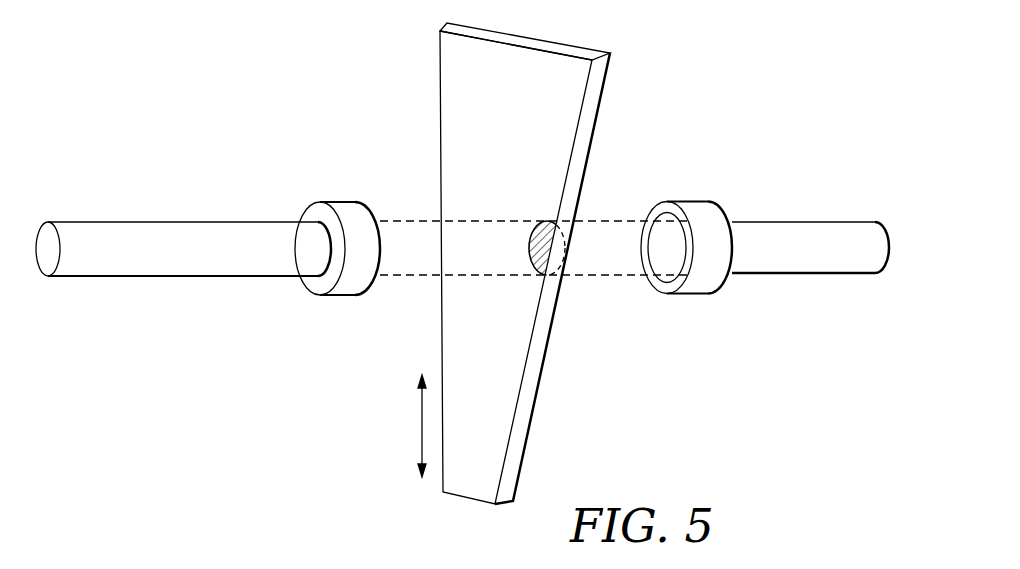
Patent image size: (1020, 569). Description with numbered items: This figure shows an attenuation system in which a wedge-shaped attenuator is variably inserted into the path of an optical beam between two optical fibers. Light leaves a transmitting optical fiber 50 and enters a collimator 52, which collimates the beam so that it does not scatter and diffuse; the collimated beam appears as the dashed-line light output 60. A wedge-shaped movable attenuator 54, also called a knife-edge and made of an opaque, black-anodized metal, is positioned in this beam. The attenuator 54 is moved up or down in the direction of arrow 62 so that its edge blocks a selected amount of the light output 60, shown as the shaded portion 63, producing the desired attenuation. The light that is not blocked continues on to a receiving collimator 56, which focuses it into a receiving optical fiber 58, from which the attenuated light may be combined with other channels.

The transmitting optical fiber 50 is at (169, 226).
The collimator 52 is at (337, 200).
The wedge-shaped movable attenuator 54 is at (447, 70).
The receiving collimator 56 is at (691, 200).
The receiving optical fiber 58 is at (819, 226).
The light output 60 is at (399, 278).
The arrow 62 is at (420, 423).
The shaded portion 63 is at (532, 230).